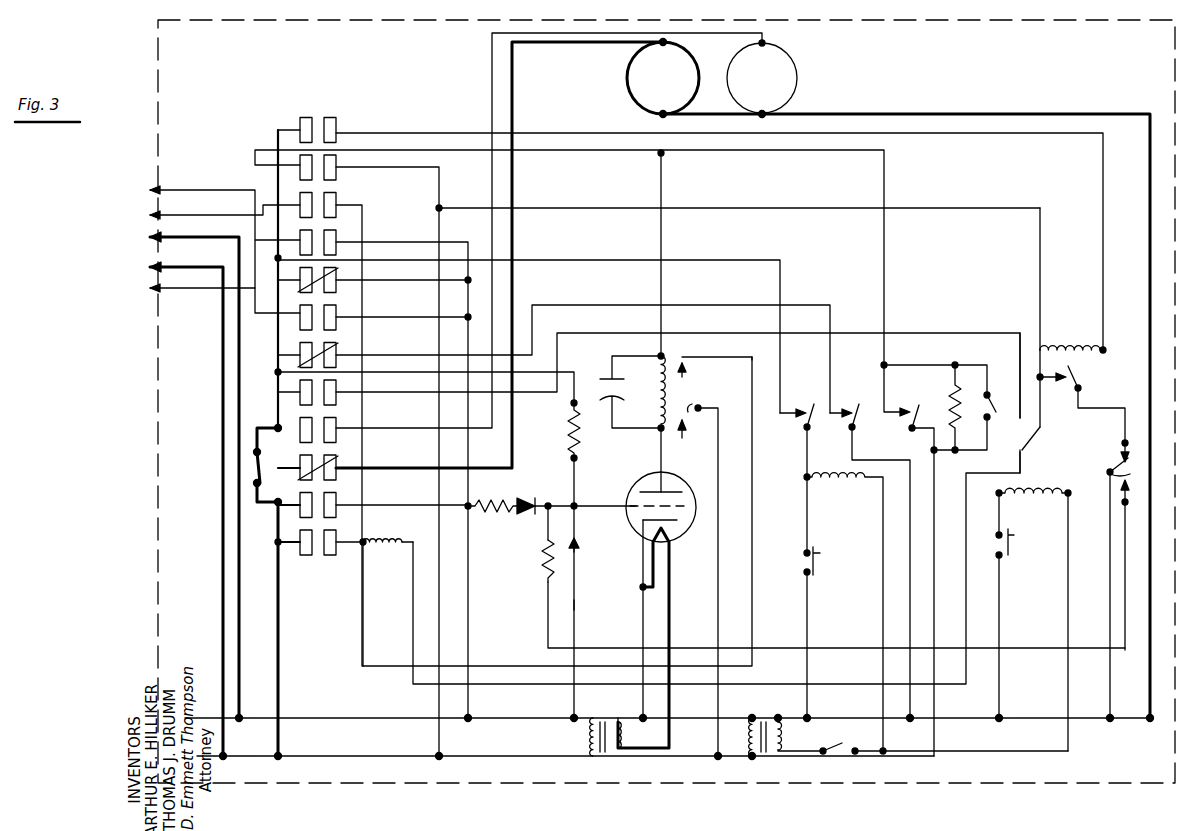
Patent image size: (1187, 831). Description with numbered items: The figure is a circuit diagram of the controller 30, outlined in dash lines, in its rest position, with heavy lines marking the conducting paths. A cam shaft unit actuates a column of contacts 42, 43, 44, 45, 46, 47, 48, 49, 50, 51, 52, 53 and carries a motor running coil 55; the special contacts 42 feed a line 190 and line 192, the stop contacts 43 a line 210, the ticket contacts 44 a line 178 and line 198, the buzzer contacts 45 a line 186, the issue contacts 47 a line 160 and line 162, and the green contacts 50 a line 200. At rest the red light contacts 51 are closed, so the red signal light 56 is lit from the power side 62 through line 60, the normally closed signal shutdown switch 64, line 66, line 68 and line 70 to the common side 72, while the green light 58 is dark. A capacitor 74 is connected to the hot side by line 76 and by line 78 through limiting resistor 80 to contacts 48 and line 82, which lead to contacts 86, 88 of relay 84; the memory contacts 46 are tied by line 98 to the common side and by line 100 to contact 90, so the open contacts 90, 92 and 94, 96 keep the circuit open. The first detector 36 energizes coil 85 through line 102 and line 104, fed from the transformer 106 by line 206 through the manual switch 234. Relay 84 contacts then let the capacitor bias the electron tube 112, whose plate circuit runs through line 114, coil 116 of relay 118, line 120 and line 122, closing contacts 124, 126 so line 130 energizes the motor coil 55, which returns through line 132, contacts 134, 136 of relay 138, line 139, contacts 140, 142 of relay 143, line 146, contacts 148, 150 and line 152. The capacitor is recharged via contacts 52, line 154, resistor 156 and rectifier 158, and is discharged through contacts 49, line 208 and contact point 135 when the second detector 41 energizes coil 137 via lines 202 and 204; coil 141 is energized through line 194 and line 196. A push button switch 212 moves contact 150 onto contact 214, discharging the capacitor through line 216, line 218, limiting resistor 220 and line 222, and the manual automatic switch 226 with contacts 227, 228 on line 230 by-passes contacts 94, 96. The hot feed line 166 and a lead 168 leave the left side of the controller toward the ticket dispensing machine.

The controller 30 is at (158, 41).
The first vehicle detector 36 is at (818, 572).
The second vehicle detector 41 is at (1014, 549).
The special contacts 42 is at (300, 123).
The stop contacts 43 is at (300, 172).
The ticket contacts 44 is at (300, 210).
The buzzer contacts 45 is at (300, 245).
The memory contacts 46 is at (308, 287).
The issue contacts 47 is at (300, 321).
The number one motor contacts 48 is at (308, 360).
The contacts 49 is at (300, 396).
The green contacts 50 is at (300, 432).
The red light contacts 51 is at (308, 472).
The contacts 52 is at (300, 508).
The contacts 53 is at (300, 551).
The motor running coil 55 is at (396, 542).
The red signal indicator light 56 is at (695, 62).
The green signal indicator light 58 is at (795, 60).
The line 60 is at (279, 641).
The power side of power supply 62 is at (302, 756).
The signal shutdown switch 64 is at (256, 468).
The line 66 is at (268, 428).
The line 68 is at (383, 468).
The line 70 is at (888, 114).
The common side of power supply 72 is at (310, 716).
The capacitor 74 is at (584, 545).
The line 76 is at (578, 603).
The line 78 is at (576, 494).
The limiting resistor 80 is at (568, 437).
The line 82 is at (396, 356).
The relay 84 is at (814, 437).
The coil of relay 84 85 is at (826, 486).
The contact of relay 84 86 is at (838, 408).
The contact of relay 84 88 is at (881, 563).
The contact of relay 84 90 is at (796, 420).
The contact of relay 84 92 is at (820, 423).
The contact of relay 84 94 is at (898, 424).
The contact of relay 84 96 is at (910, 408).
The line 98 is at (466, 618).
The line 100 is at (380, 263).
The line 102 is at (808, 620).
The line 104 is at (826, 544).
The transformer 106 is at (758, 760).
The electron vacuum tube 112 is at (684, 531).
The line 114 is at (661, 451).
The coil of relay 118 116 is at (660, 404).
The relay 118 is at (668, 398).
The line 120 is at (658, 260).
The line 122 is at (934, 552).
The contact of relay 118 124 is at (702, 400).
The contact of relay 118 126 is at (690, 367).
The line 130 is at (362, 604).
The line 132 is at (412, 612).
The contact of relay 138 134 is at (1018, 463).
The contact point 135 is at (1000, 413).
The movable contact of relay 138 136 is at (1028, 438).
The coil of relay 138 137 is at (1022, 500).
The relay 138 is at (1024, 480).
The line 139 is at (1040, 388).
The contact of relay 143 140 is at (1044, 365).
The coil of relay 143 141 is at (1086, 338).
The contact of relay 143 142 is at (1076, 380).
The relay 143 is at (1098, 359).
The line 146 is at (1090, 408).
The contact 148 is at (1130, 443).
The movable contact 150 is at (1132, 475).
The line 152 is at (1108, 552).
The line 154 is at (378, 505).
The limiting resistor 156 is at (491, 493).
The rectifier 158 is at (548, 486).
The line 160 is at (384, 318).
The line 162 is at (170, 290).
The hot feed line 166 is at (164, 268).
The lead 168 is at (168, 236).
The line 178 is at (168, 215).
The line 186 is at (168, 190).
The line 190 is at (278, 166).
The line 192 is at (960, 135).
The line 194 is at (972, 210).
The line 196 is at (438, 210).
The line 198 is at (365, 213).
The line 200 is at (382, 430).
The line 202 is at (998, 644).
The line 204 is at (1068, 602).
The line 206 is at (976, 758).
The line 208 is at (378, 393).
The line 210 is at (562, 154).
The push button switch 212 is at (1114, 462).
The contact 214 is at (1132, 497).
The line 216 is at (558, 514).
The line 218 is at (545, 530).
The limiting resistor 220 is at (542, 560).
The line 222 is at (548, 628).
The manual automatic switch 226 is at (1000, 403).
The switch contact 227 is at (980, 400).
The contact 228 is at (984, 425).
The line 230 is at (930, 365).
The manual switch 234 is at (850, 758).